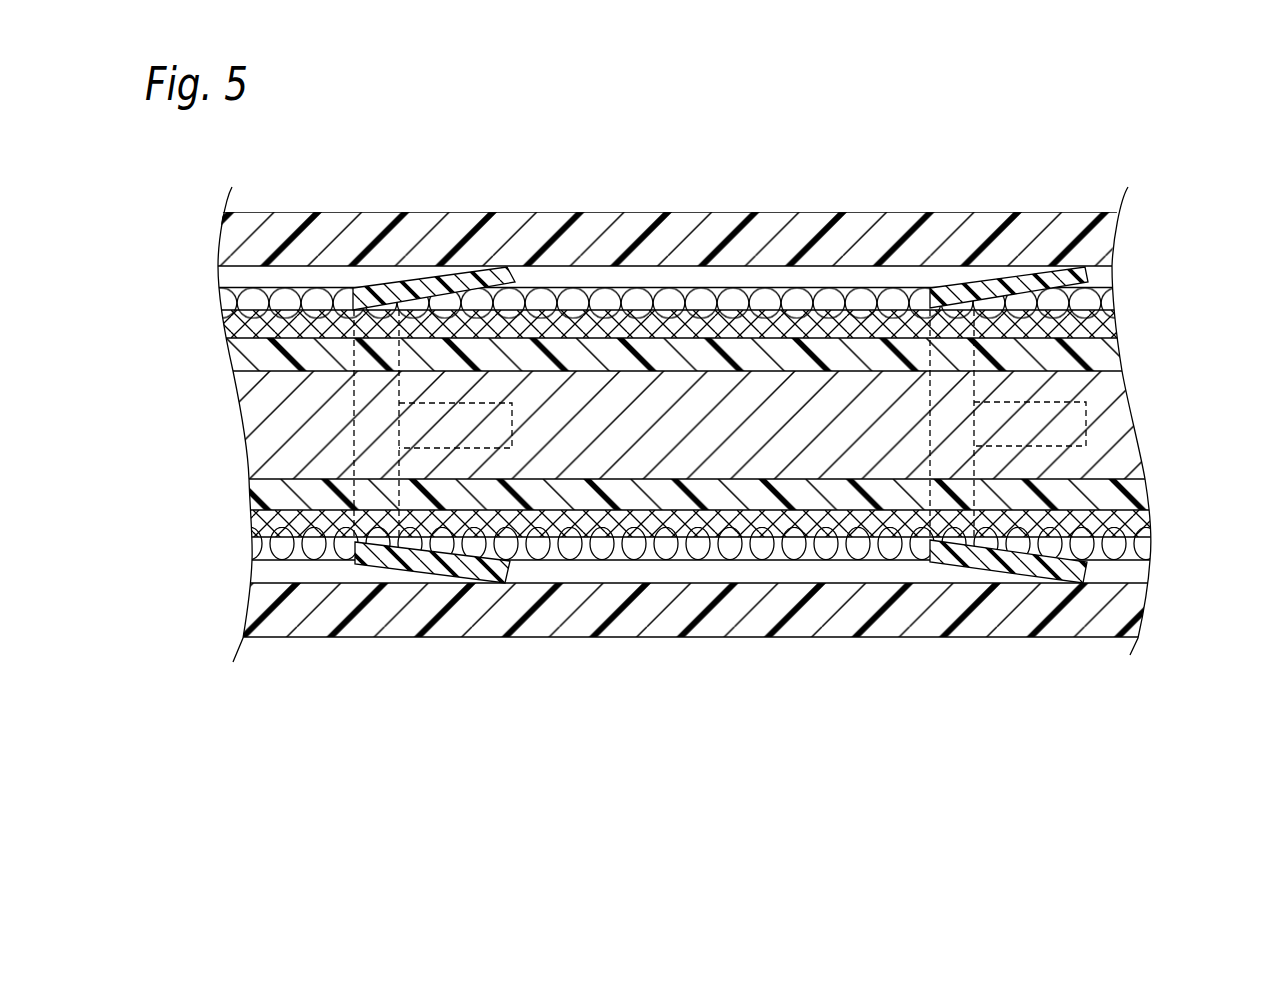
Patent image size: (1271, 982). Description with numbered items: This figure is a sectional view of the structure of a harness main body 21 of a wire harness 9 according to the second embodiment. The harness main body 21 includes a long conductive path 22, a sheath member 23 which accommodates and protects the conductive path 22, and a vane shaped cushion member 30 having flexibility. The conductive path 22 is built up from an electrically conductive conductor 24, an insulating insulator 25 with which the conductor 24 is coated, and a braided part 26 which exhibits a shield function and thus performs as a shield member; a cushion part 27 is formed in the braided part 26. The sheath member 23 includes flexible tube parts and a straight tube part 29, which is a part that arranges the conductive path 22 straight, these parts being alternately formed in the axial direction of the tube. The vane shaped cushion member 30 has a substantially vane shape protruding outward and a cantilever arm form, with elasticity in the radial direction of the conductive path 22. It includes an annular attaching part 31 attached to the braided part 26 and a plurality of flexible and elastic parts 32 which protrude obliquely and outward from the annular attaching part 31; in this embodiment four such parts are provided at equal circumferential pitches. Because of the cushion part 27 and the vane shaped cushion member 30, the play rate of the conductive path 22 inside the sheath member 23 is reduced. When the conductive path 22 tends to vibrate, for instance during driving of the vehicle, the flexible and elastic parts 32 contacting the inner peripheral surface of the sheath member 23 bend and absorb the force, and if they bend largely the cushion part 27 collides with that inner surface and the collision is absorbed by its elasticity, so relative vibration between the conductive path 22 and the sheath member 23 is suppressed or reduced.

The wire harness 9 is at (716, 395).
The harness main body 21 is at (716, 395).
The conductive path 22 is at (680, 311).
The sheath member 23 is at (680, 191).
The conductor 24 is at (597, 395).
The insulator 25 is at (652, 355).
The braided part 26 is at (706, 312).
The cushion part 27 is at (777, 562).
The straight tube part 29 is at (878, 212).
The vane shaped cushion member 30 is at (378, 285).
The annular attaching part 31 is at (360, 555).
The flexible and elastic parts 32 is at (467, 275).